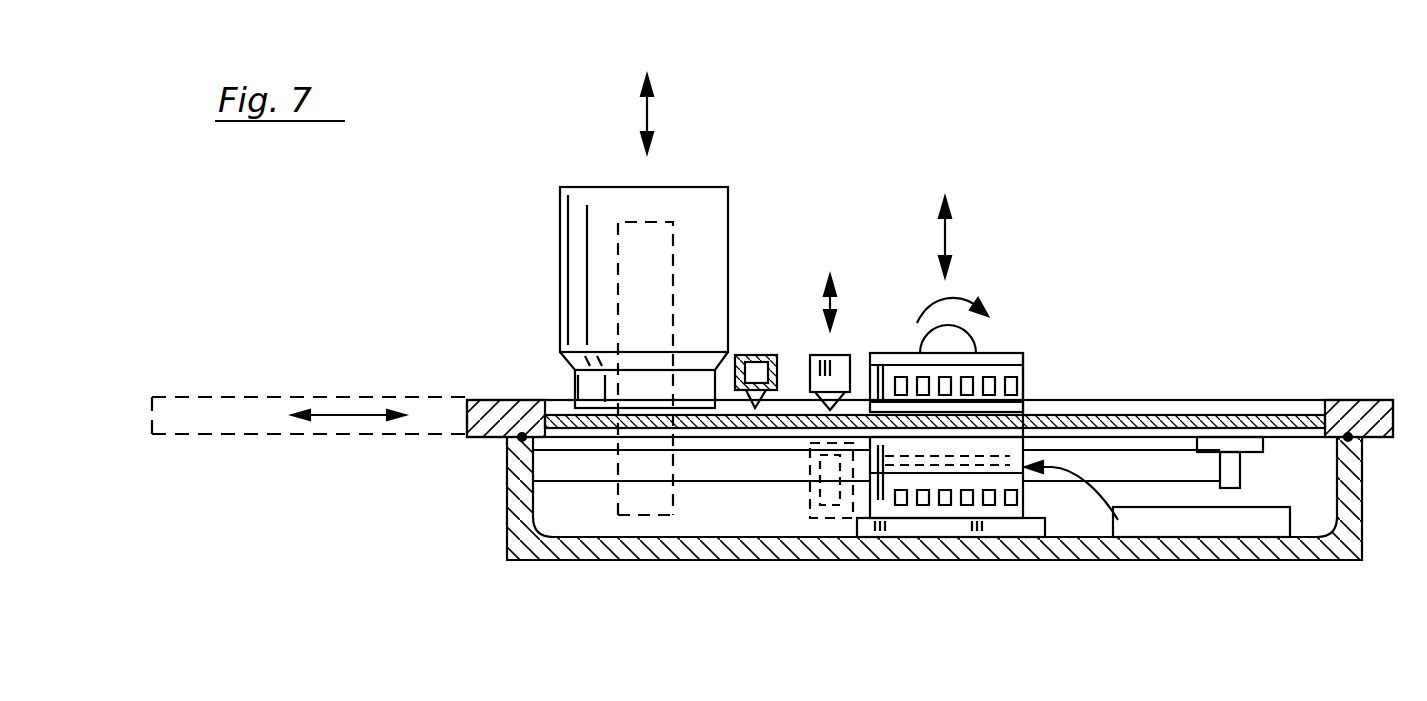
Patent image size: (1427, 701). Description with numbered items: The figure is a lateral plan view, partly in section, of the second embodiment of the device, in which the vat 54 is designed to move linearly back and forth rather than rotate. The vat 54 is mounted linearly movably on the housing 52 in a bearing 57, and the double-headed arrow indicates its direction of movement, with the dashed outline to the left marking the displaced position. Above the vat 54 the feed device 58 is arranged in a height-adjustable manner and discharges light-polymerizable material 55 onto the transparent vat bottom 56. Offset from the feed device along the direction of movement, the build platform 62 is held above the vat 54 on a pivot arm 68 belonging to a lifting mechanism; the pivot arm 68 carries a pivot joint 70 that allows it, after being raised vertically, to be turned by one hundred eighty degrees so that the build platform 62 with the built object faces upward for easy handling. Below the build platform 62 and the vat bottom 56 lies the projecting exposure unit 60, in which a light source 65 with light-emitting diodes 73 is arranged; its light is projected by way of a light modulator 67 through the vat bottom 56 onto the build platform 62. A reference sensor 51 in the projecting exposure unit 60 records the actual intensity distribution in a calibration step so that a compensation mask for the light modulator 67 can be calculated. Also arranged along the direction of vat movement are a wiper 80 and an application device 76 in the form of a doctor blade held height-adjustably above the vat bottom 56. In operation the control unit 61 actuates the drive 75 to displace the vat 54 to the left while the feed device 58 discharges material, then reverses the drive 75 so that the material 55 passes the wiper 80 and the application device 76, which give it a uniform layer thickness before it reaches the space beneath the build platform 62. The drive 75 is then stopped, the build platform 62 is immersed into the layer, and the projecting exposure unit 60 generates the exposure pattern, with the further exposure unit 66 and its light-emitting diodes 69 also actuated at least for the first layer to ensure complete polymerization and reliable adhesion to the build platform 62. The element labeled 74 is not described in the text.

The reference sensor 51 is at (942, 482).
The housing 52 is at (505, 522).
The vat 54 is at (490, 398).
The light-polymerizable material 55 is at (785, 410).
The vat bottom 56 is at (1190, 402).
The bearing 57 is at (510, 447).
The feed device 58 is at (728, 218).
The projecting exposure unit 60 is at (1118, 520).
The control unit 61 is at (1237, 522).
The build platform 62 is at (1033, 414).
The light source 65 is at (1008, 485).
The further exposure unit 66 is at (890, 356).
The light modulator 67 is at (977, 445).
The pivot arm 68 is at (1003, 362).
The light-emitting diodes 69 is at (1033, 375).
The pivot joint 70 is at (960, 345).
The light-emitting diodes 73 is at (957, 505).
The slide rail 74 is at (750, 463).
The drive 75 is at (1243, 457).
The application device 76 is at (833, 360).
The wiper 80 is at (755, 355).